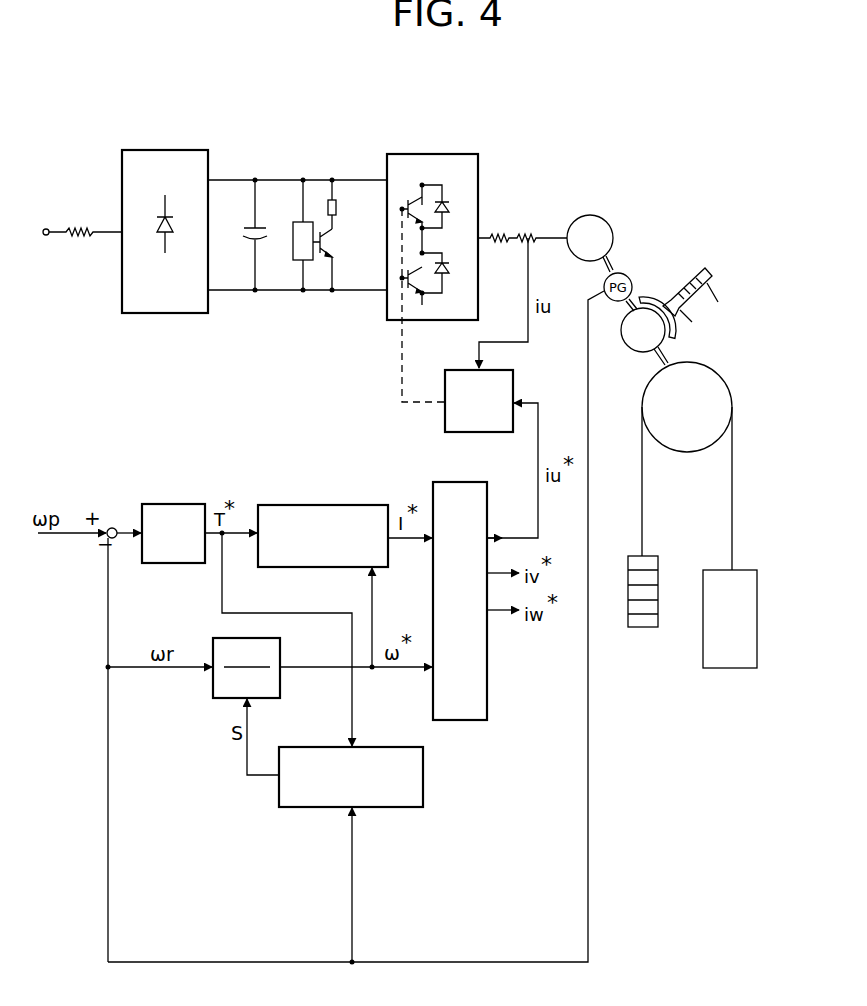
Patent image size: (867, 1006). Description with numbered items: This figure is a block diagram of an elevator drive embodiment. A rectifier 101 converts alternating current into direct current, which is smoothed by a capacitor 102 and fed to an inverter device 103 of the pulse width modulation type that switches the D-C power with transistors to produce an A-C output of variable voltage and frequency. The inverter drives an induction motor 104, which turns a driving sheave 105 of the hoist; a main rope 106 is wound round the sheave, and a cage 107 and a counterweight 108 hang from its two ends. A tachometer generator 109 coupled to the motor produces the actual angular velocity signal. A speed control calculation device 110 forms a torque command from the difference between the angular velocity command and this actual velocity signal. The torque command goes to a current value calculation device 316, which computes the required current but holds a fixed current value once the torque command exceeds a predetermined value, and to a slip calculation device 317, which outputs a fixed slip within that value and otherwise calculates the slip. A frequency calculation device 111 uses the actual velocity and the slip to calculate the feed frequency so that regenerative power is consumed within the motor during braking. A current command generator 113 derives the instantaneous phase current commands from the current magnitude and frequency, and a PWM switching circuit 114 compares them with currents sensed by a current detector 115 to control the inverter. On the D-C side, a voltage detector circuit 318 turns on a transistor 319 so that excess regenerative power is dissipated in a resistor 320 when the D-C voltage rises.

The rectifier 101 is at (166, 150).
The capacitor 102 is at (260, 226).
The inverter device 103 is at (436, 154).
The induction motor 104 is at (590, 215).
The driving sheave 105 is at (730, 385).
The main rope 106 is at (733, 490).
The cage 107 is at (727, 668).
The counterweight 108 is at (658, 559).
The tachometer generator 109 is at (628, 276).
The speed control calculation device 110 is at (170, 504).
The frequency calculation device 111 is at (214, 638).
The current command generator 113 is at (433, 482).
The pulse width modulation switching circuit 114 is at (513, 376).
The current detector 115 is at (531, 234).
The current value calculation device 316 is at (320, 505).
The slip calculation device 317 is at (393, 808).
The voltage detector circuit 318 is at (293, 262).
The transistor 319 is at (333, 245).
The resistor 320 is at (336, 203).